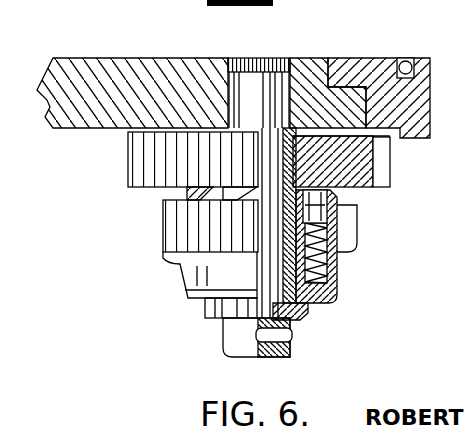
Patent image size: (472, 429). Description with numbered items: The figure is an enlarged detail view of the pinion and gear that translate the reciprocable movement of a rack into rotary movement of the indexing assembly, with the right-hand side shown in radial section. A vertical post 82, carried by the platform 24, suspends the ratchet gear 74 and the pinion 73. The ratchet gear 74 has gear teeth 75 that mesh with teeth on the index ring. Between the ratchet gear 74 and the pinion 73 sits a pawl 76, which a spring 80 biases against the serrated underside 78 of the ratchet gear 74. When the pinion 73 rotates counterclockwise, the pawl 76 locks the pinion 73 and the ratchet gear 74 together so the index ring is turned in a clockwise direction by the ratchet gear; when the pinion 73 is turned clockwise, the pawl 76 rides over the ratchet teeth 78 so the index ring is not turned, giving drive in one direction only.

The platform 24 is at (88, 58).
The vertical post 82 is at (256, 83).
The serrated underside 78 is at (170, 194).
The pinion 73 is at (160, 238).
The ratchet gear 74 is at (352, 178).
The gear teeth 75 is at (385, 167).
The pawl 76 is at (340, 218).
The spring 80 is at (338, 265).